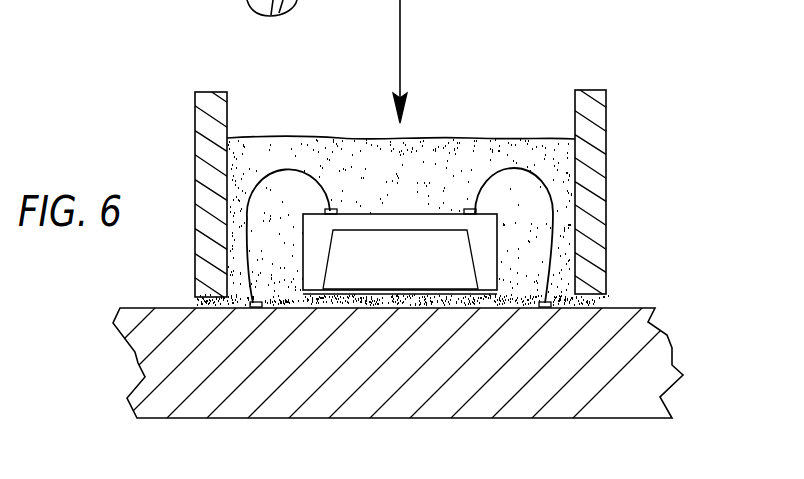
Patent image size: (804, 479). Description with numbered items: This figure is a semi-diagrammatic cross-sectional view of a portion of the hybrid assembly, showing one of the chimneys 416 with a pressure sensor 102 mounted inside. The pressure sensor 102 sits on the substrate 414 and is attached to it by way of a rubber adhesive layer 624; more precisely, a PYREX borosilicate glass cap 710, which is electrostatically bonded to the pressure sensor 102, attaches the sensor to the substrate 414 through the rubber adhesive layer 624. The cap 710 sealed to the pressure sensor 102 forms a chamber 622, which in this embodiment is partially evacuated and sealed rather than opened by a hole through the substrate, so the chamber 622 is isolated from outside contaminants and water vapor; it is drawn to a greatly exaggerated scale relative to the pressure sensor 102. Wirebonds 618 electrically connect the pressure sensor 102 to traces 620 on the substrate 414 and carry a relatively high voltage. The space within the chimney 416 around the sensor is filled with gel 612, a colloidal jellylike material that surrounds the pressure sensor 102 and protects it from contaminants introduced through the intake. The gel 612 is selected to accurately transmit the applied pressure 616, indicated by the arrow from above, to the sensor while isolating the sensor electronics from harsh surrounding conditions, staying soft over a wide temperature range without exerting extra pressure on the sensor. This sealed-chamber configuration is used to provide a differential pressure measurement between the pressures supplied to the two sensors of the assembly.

The pressure sensor 102 is at (309, 212).
The substrate 414 is at (641, 339).
The chimney 416 is at (601, 118).
The gel 612 is at (492, 137).
The pressure 616 is at (400, 47).
The wirebonds 618 is at (476, 192).
The traces 620 is at (254, 309).
The chamber 622 is at (389, 291).
The rubber adhesive layer 624 is at (413, 304).
The cap 710 is at (450, 290).